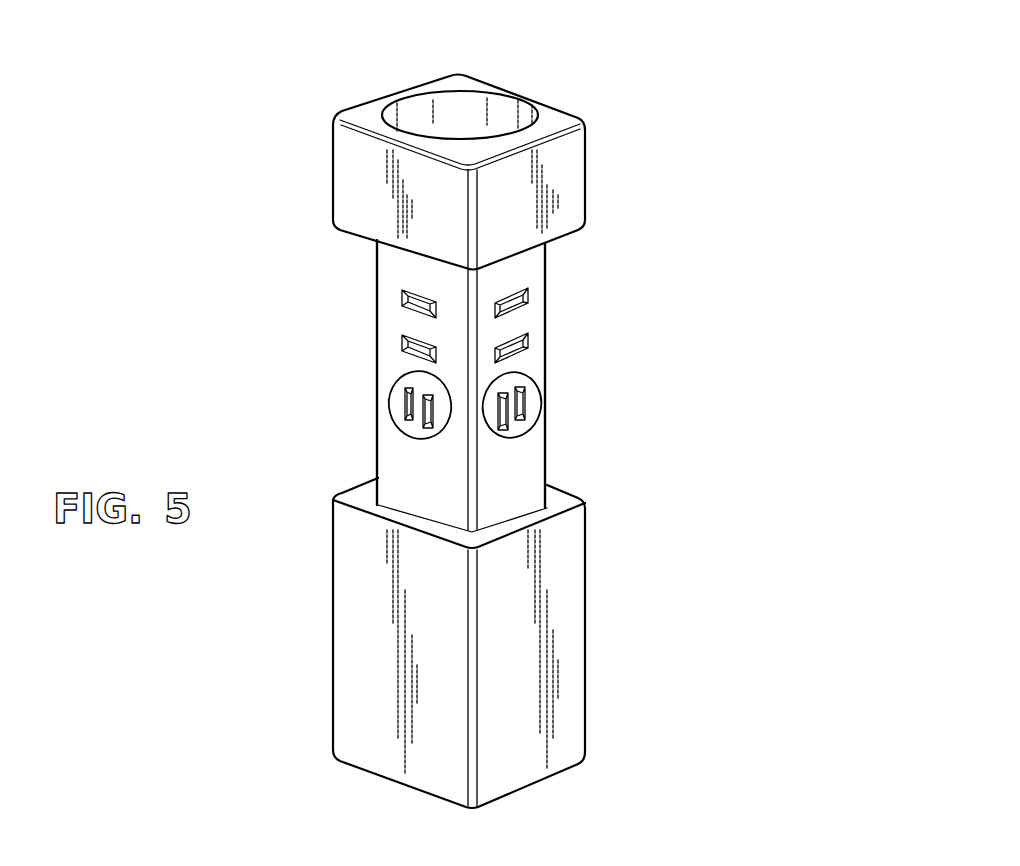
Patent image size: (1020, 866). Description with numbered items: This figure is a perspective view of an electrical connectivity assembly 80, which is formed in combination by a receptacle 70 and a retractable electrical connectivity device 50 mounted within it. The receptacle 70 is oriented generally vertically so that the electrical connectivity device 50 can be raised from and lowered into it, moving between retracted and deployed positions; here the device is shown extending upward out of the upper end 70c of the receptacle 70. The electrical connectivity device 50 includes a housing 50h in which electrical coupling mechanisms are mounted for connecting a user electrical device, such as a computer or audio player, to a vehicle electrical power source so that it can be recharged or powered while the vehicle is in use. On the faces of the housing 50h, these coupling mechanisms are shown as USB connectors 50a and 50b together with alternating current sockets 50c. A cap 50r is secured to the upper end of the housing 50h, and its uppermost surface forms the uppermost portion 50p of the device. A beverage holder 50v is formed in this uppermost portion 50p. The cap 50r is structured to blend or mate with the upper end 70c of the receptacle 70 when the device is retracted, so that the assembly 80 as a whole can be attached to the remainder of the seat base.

The electrical connectivity device 50 is at (277, 495).
The cap 50r is at (332, 148).
The uppermost portion 50p is at (555, 117).
The beverage holder 50v is at (448, 108).
The housing 50h is at (385, 357).
The USB connector 50a is at (528, 295).
The USB connector 50b is at (528, 337).
The alternating current (AC) socket 50c is at (537, 397).
The receptacle 70 is at (331, 643).
The upper end of the receptacle 70c is at (357, 502).
The electrical connectivity assembly 80 is at (347, 415).